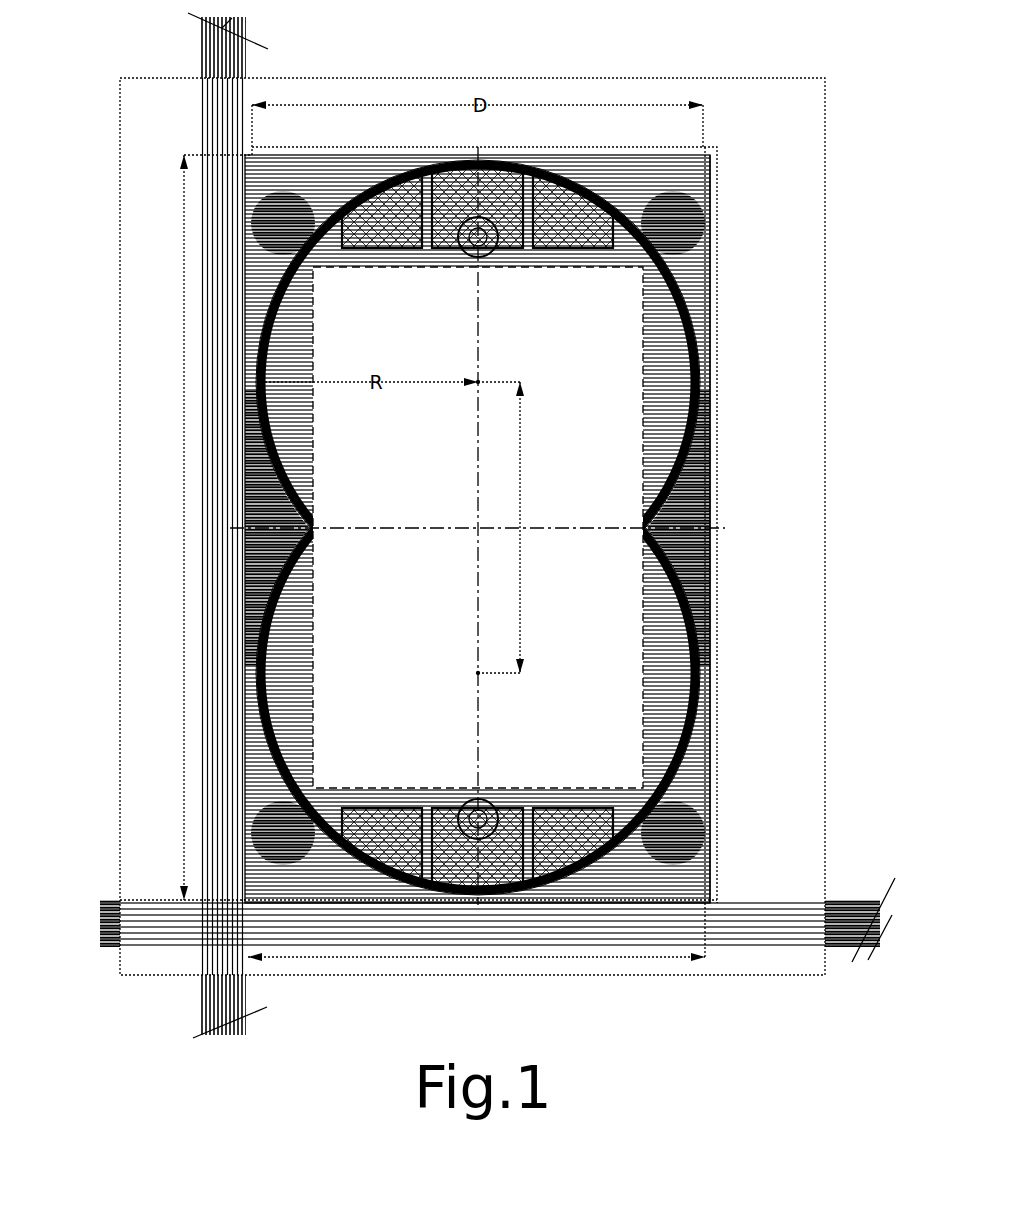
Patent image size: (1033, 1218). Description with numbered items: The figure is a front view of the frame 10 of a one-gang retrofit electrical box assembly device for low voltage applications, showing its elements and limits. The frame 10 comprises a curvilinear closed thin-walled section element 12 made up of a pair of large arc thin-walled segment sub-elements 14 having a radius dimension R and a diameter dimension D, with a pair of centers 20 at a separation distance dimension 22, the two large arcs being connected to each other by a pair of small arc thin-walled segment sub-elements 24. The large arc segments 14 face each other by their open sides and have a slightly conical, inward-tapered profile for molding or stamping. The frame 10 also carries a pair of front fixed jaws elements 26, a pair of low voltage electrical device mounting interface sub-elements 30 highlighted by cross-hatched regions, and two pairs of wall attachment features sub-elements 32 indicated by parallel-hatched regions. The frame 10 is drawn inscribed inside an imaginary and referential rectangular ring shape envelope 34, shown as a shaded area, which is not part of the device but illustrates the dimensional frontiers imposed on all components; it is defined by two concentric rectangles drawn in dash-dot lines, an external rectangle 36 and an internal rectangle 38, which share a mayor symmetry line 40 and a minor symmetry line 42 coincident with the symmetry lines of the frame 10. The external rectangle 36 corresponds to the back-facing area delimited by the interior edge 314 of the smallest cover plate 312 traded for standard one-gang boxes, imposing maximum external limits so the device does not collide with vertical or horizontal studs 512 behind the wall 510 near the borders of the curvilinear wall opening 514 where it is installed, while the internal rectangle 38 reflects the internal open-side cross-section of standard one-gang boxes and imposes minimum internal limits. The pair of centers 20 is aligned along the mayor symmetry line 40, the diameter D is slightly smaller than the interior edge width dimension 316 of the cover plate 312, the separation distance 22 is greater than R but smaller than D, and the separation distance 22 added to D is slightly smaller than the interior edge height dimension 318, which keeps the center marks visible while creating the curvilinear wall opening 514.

The frame 10 is at (722, 555).
The curvilinear closed thin-walled section element 12 is at (694, 464).
The large arc thin-walled segment sub-element 14 is at (683, 485).
The center 20 is at (474, 386).
The separation distance dimension 22 is at (504, 527).
The small arc thin-walled segment sub-element 24 is at (313, 510).
The front fixed jaw element 26 is at (650, 242).
The low voltage electrical device mounting interface sub-element 30 is at (470, 258).
The wall attachment feature sub-element 32 is at (387, 255).
The rectangular ring shape envelope 34 is at (648, 714).
The external rectangle 36 is at (712, 584).
The internal rectangle 38 is at (632, 404).
The mayor symmetry line 40 is at (474, 604).
The minor symmetry line 42 is at (563, 536).
The smallest cover plate 312 is at (719, 369).
The interior edge 314 is at (714, 404).
The interior edge width dimension 316 is at (418, 934).
The interior edge height dimension 318 is at (209, 527).
The wall 510 is at (832, 418).
The stud 512 is at (262, 995).
The curvilinear wall opening 514 is at (702, 439).